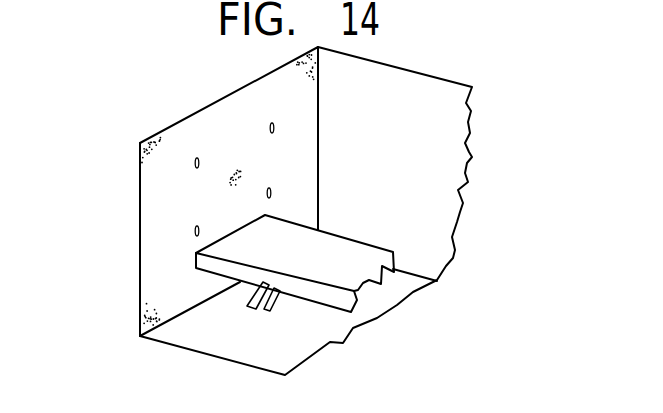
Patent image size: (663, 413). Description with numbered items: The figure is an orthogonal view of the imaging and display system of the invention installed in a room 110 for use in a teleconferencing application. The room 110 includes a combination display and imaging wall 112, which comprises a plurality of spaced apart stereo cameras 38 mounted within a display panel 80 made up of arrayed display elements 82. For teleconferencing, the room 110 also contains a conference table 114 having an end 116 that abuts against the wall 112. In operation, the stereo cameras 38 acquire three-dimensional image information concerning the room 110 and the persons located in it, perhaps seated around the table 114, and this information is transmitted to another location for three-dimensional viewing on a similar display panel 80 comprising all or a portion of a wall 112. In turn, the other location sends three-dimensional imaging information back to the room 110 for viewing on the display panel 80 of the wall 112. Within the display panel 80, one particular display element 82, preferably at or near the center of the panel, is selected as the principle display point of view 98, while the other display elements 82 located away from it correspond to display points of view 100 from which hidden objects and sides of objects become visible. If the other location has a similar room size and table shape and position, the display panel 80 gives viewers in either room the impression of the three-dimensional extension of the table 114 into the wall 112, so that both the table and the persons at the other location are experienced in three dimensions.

The room 110 is at (306, 211).
The combination display and imaging wall 112 is at (215, 126).
The conference table 114 is at (296, 248).
The end 116 is at (241, 234).
The stereo cameras 38 is at (268, 190).
The principle display point of view 98 is at (230, 173).
The display elements 82 is at (153, 155).
The display panel 80 is at (147, 222).
The display points of view 100 is at (171, 195).